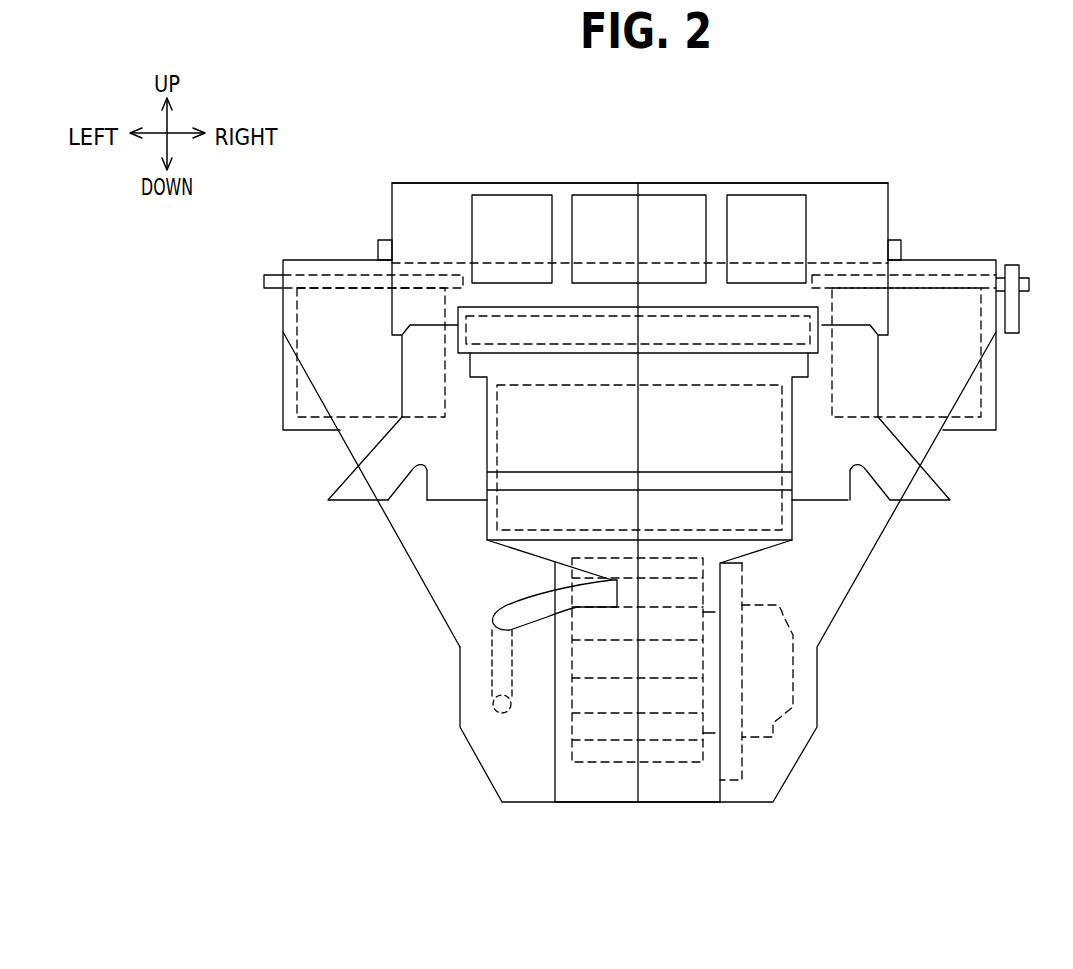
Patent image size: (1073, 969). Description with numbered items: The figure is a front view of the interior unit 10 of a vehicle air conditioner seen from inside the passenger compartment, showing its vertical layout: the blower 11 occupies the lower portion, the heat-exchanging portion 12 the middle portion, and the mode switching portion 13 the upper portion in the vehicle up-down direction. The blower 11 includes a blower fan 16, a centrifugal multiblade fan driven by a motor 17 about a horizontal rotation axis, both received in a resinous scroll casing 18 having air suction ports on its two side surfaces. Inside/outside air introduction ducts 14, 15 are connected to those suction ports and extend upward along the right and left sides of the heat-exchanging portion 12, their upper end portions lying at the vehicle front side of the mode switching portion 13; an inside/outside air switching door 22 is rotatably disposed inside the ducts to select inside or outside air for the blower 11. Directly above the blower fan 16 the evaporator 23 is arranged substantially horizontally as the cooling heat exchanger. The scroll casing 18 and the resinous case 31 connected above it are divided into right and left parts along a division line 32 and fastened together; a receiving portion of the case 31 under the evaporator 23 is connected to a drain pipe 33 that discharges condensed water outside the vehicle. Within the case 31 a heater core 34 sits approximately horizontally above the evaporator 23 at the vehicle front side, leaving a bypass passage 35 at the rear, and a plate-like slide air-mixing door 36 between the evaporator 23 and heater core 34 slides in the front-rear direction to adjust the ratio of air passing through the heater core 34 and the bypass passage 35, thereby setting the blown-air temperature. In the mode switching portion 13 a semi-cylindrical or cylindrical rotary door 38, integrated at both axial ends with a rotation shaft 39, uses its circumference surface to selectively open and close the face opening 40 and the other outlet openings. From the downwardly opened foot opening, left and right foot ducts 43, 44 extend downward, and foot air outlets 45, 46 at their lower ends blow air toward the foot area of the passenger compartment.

The interior unit 10 is at (456, 697).
The blower 11 is at (665, 796).
The heat-exchanging portion 12 is at (745, 515).
The mode switching portion 13 is at (692, 183).
The inside/outside air introduction duct 14 is at (432, 567).
The inside/outside air introduction duct 15 is at (825, 605).
The blower fan 16 is at (605, 762).
The motor 17 is at (767, 723).
The scroll casing 18 is at (555, 738).
The inside/outside air switching door 22 is at (343, 275).
The evaporator 23 is at (795, 523).
The resinous case 31 is at (485, 525).
The division line 32 is at (643, 511).
The drain pipe 33 is at (528, 613).
The heater core 34 is at (789, 318).
The bypass passage 35 is at (778, 327).
The slide air-mixing door 36 is at (597, 363).
The rotary door 38 is at (447, 205).
The rotation shaft 39 is at (380, 240).
The face opening 40 is at (513, 205).
The left foot duct 43 is at (400, 383).
The right foot duct 44 is at (880, 383).
The foot air outlet 45 is at (357, 502).
The foot air outlet 46 is at (922, 503).